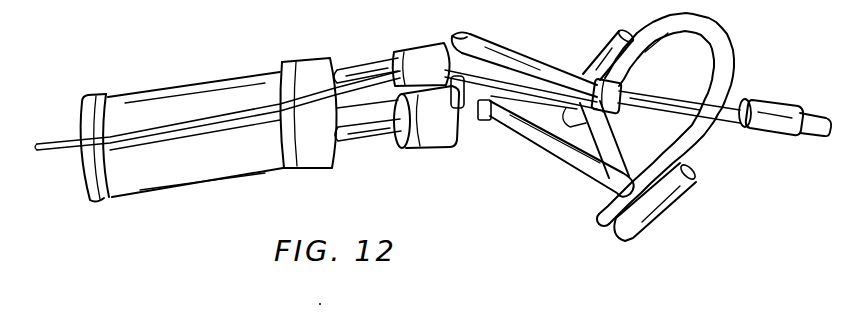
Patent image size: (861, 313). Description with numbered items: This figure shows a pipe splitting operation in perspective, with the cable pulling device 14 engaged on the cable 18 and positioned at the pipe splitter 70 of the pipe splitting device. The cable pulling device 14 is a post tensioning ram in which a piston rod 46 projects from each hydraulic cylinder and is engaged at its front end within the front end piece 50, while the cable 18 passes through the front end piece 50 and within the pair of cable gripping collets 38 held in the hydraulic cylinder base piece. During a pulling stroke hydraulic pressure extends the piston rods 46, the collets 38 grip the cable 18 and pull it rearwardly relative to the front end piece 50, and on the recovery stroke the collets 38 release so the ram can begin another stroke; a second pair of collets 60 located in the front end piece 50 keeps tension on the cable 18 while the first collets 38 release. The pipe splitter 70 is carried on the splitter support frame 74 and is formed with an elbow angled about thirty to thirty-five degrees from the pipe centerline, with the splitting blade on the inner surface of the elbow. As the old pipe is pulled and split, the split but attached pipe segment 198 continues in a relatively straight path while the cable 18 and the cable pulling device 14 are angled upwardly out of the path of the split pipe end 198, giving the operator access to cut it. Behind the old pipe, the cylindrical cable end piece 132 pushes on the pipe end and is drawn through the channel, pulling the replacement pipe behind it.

The cable pulling device 14 is at (178, 62).
The cable 18 is at (62, 141).
The cable gripping collets 38 is at (314, 64).
The piston rod 46 is at (364, 66).
The front end piece 50 is at (425, 134).
The second pair of collets 60 is at (420, 66).
The pipe splitter 70 is at (497, 90).
The splitter support frame 74 is at (691, 156).
The cylindrical member 132 is at (790, 77).
The split pipe segment 198 is at (520, 62).